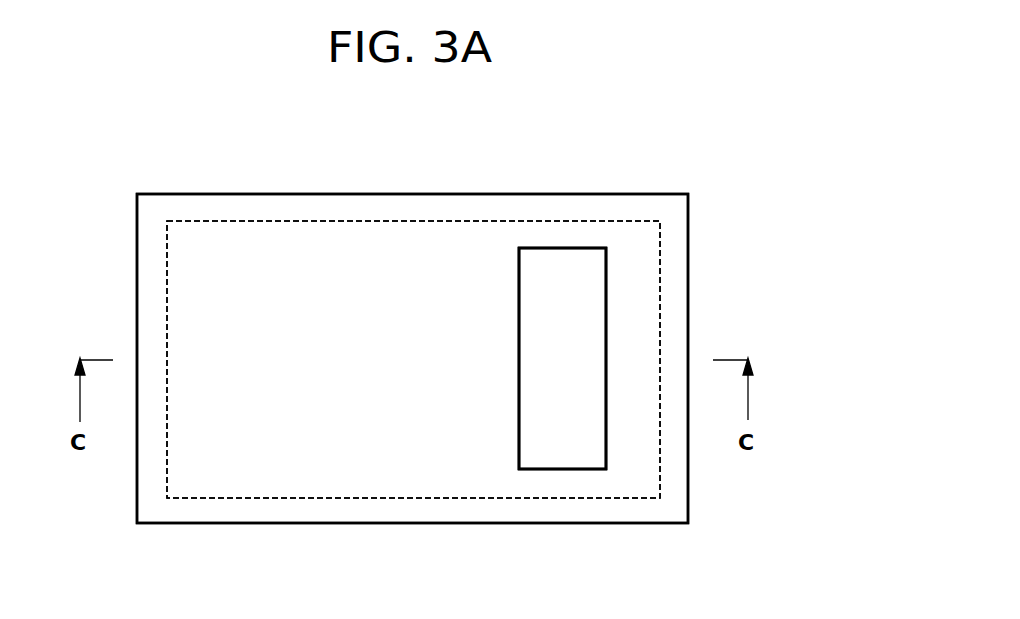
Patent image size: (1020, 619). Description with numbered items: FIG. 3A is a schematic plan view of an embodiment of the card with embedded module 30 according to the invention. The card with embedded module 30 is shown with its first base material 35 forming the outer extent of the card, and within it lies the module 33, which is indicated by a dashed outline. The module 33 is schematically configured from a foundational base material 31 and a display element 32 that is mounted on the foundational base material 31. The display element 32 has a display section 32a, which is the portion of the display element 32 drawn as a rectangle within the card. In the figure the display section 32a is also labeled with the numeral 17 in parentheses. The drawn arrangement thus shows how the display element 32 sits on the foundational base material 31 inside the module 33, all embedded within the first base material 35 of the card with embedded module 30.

The card with embedded module 30 is at (673, 153).
The foundational base material 31 is at (638, 303).
The display element 32 is at (518, 333).
The display section 32a is at (565, 267).
The optical sensor 17 is at (562, 358).
The module 33 is at (661, 485).
The first base material 35 is at (673, 207).